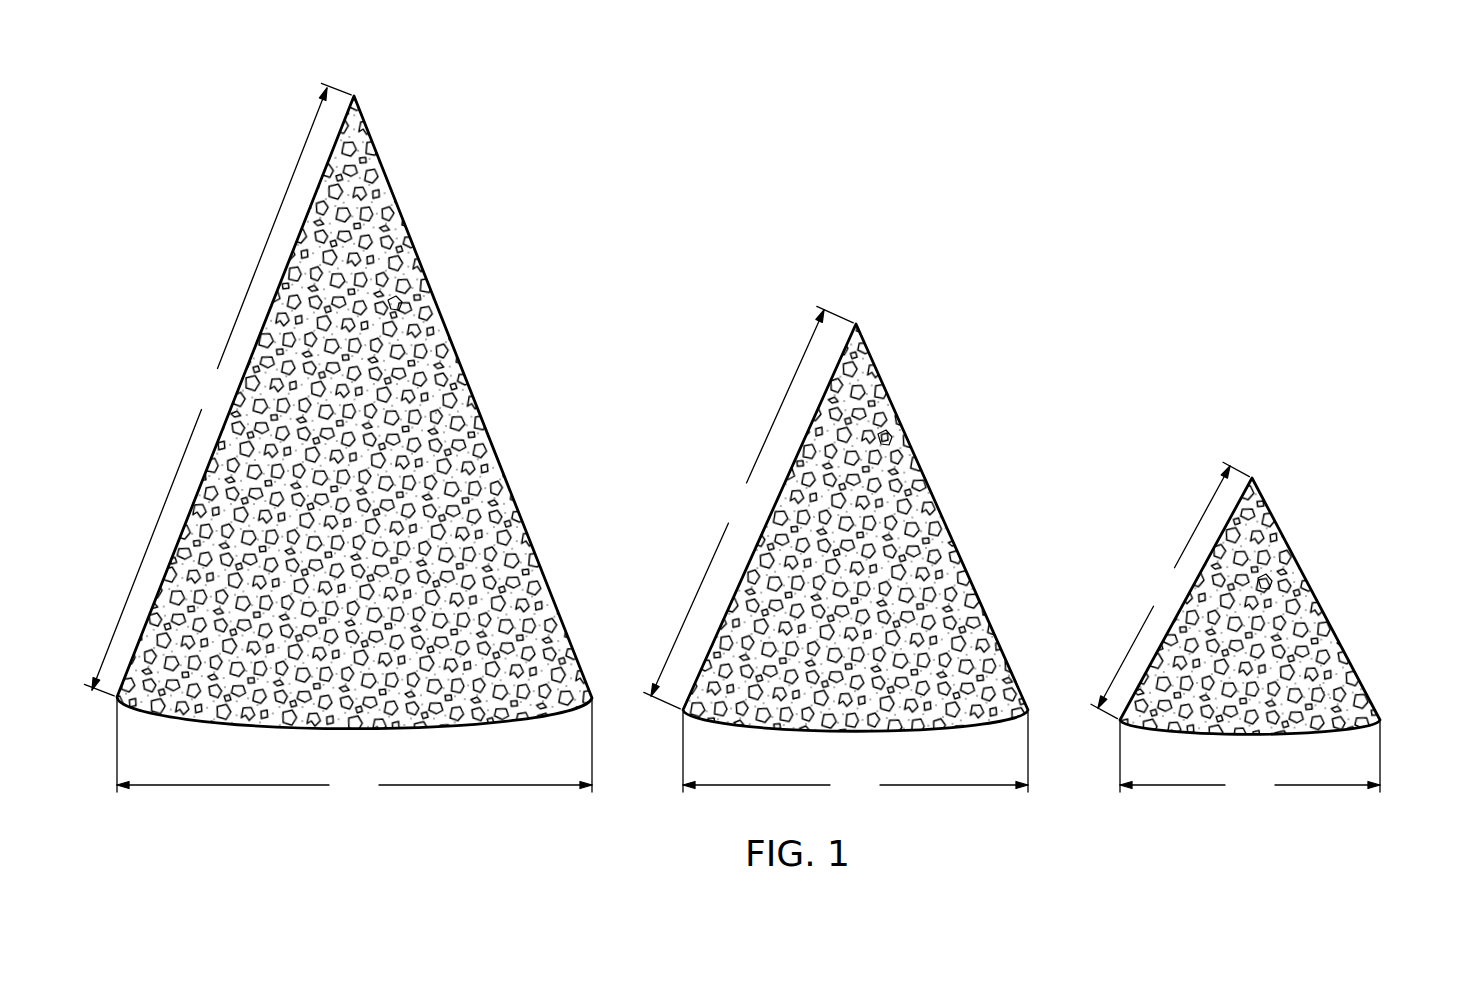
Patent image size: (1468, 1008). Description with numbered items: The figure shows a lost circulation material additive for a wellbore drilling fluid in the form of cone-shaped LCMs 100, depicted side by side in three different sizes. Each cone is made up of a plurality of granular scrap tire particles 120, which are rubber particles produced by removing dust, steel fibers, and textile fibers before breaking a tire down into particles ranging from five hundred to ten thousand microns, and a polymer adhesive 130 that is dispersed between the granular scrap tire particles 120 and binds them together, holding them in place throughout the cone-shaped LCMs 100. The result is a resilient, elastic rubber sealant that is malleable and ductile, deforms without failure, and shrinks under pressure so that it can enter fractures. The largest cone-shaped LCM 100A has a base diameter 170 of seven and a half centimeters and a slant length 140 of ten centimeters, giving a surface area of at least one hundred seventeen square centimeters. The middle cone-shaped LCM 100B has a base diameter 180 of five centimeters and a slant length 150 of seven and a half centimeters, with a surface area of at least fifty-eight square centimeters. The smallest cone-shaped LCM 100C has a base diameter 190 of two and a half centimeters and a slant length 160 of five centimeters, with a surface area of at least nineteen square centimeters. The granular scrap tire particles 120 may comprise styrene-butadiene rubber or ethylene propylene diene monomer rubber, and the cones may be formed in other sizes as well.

The cone-shaped LCMs 100 is at (823, 160).
The cone-shaped LCM 100A is at (540, 552).
The cone-shaped LCM 100B is at (1000, 640).
The cone-shaped LCM 100C is at (1343, 635).
The granular scrap tire particles 120 is at (397, 300).
The polymer adhesive 130 is at (447, 418).
The slant length 140 is at (217, 389).
The slant length 150 is at (749, 507).
The slant length 160 is at (1170, 590).
The base diameter 170 is at (354, 750).
The base diameter 180 is at (855, 756).
The base diameter 190 is at (1250, 761).